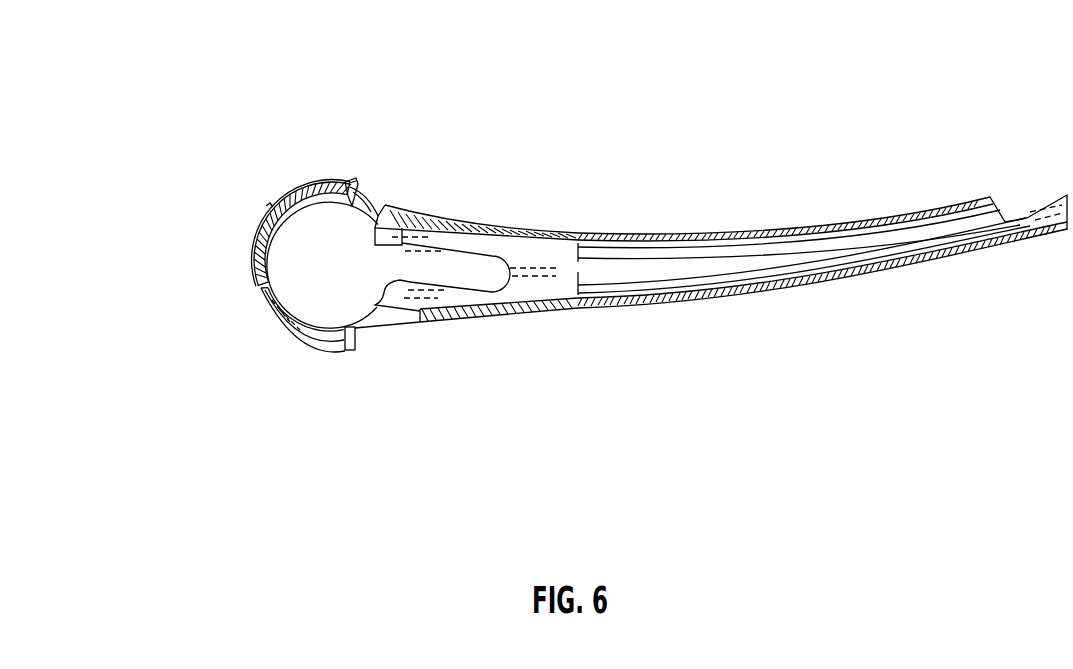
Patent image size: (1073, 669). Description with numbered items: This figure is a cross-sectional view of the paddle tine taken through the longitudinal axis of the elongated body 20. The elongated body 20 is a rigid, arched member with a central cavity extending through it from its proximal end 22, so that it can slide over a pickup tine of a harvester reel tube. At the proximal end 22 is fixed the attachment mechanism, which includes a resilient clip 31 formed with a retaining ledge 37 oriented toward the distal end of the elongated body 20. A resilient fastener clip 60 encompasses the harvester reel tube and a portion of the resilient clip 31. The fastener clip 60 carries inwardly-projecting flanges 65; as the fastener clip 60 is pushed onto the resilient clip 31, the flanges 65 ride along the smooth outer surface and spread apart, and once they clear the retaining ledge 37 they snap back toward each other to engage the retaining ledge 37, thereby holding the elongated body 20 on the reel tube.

The elongated body 20 is at (838, 282).
The proximal end 22 is at (262, 298).
The resilient clip 31 is at (318, 202).
The retaining ledge 37 is at (318, 190).
The fastener clip 60 is at (268, 202).
The inwardly-projecting flange 65 is at (378, 205).